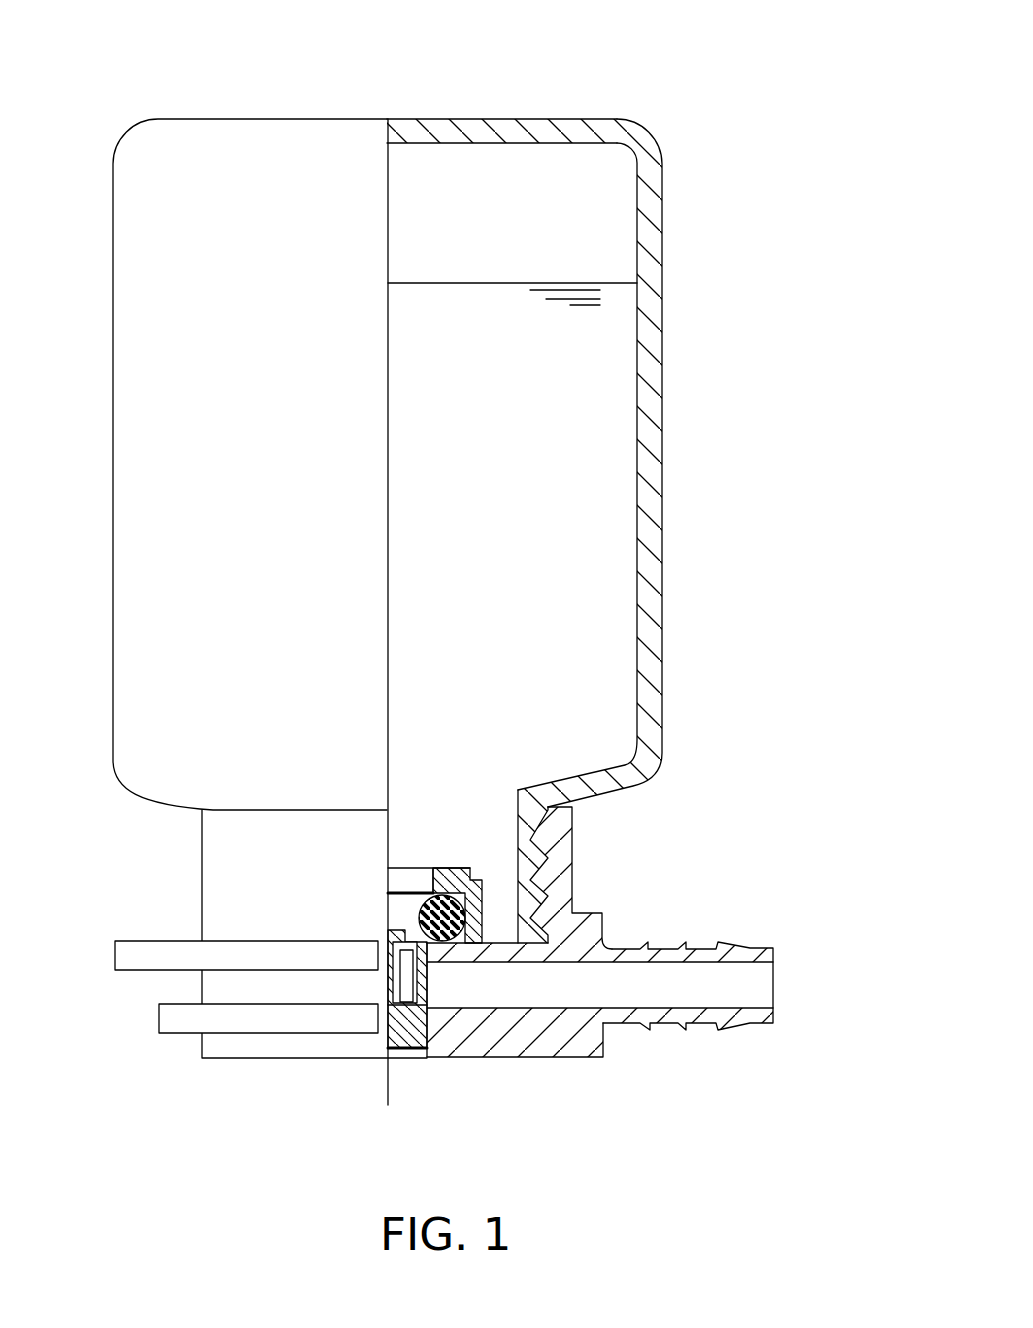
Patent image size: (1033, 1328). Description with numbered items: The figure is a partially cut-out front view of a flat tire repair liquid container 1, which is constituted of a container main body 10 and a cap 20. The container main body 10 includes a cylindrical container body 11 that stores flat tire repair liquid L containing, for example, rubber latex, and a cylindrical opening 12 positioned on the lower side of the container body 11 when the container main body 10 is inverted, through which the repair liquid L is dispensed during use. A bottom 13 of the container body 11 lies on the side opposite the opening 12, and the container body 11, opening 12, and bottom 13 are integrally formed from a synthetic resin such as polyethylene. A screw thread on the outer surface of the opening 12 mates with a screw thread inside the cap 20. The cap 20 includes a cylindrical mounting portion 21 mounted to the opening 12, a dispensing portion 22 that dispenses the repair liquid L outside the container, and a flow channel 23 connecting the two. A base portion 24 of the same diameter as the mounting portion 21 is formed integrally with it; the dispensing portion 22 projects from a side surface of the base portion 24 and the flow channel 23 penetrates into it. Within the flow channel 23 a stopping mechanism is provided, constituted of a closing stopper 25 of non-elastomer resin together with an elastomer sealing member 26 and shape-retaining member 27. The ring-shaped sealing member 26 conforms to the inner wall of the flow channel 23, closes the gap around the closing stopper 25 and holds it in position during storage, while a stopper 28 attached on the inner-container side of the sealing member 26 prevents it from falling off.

The flat tire repair liquid container 1 is at (648, 120).
The container main body 10 is at (147, 440).
The container body 11 is at (647, 490).
The opening 12 is at (525, 868).
The bottom 13 is at (452, 130).
The flat tire repair liquid L is at (613, 323).
The cap 20 is at (293, 1058).
The mounting portion 21 is at (562, 885).
The dispensing portion 22 is at (693, 1015).
The flow channel 23 is at (470, 988).
The base portion 24 is at (533, 1045).
The closing stopper 25 is at (400, 1028).
The sealing member 26 is at (422, 890).
The shape-retaining member 27 is at (393, 990).
The stopper 28 is at (450, 868).